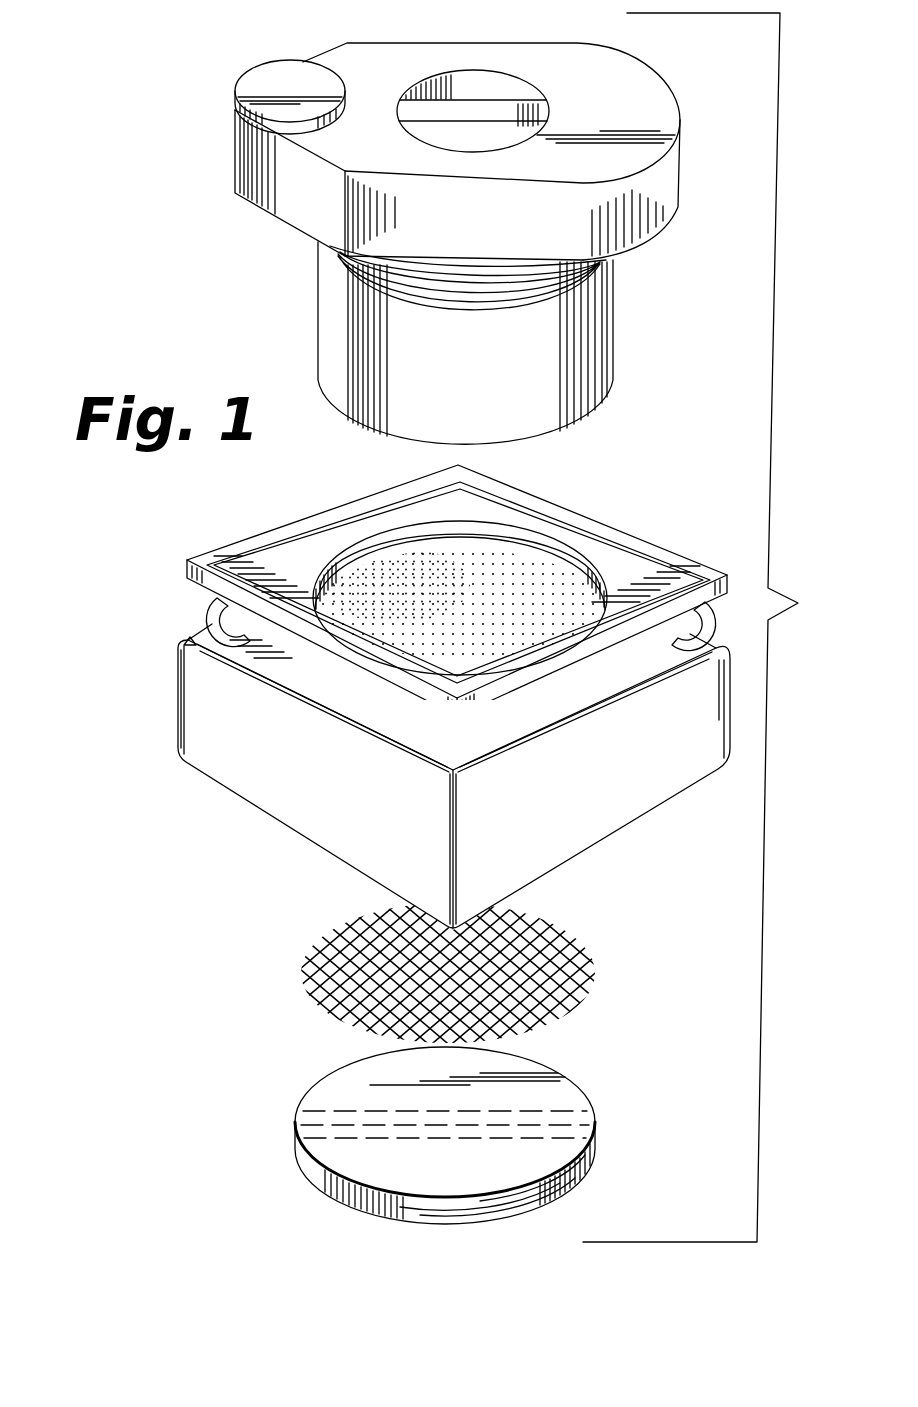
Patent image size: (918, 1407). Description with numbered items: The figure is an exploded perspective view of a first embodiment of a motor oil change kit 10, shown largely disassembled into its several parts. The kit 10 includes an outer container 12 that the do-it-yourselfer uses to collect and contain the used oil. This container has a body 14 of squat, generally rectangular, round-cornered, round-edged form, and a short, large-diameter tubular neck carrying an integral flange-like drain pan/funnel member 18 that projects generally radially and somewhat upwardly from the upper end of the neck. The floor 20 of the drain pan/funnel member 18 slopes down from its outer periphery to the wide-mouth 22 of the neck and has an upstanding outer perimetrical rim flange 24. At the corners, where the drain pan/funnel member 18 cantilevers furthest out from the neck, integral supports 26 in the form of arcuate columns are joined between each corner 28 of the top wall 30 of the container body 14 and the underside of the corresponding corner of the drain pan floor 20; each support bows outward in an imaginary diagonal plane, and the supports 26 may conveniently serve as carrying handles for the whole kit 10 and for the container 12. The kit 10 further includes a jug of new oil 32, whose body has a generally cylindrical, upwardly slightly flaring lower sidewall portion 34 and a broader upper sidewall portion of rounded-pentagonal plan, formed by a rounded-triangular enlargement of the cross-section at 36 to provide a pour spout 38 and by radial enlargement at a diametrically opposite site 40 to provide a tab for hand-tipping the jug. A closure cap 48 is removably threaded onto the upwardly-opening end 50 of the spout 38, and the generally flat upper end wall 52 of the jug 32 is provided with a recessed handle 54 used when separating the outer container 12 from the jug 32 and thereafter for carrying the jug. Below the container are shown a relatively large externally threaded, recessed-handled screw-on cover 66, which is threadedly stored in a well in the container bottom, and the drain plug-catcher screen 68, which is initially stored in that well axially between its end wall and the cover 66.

The kit 10 is at (807, 608).
The outer container 12 is at (272, 810).
The body 14 is at (178, 714).
The drain pan/funnel member 18 is at (452, 590).
The floor 20 is at (358, 516).
The wide-mouth 22 is at (426, 528).
The outer perimetrical rim flange 24 is at (556, 514).
The supports 26 is at (215, 606).
The corner 28 is at (182, 641).
The top wall 30 is at (350, 706).
The jug of new oil 32 is at (452, 225).
The lower sidewall portion 34 is at (320, 302).
The rounded-triangular enlargement 36 is at (322, 155).
The pour spout 38 is at (237, 158).
The diametrically opposite site 40 is at (668, 187).
The closure cap 48 is at (252, 79).
The upwardly-opening end 50 is at (237, 114).
The upper end wall 52 is at (448, 41).
The recessed handle 54 is at (510, 111).
The screw-on cover 66 is at (343, 1068).
The drain plug-catcher screen 68 is at (297, 961).